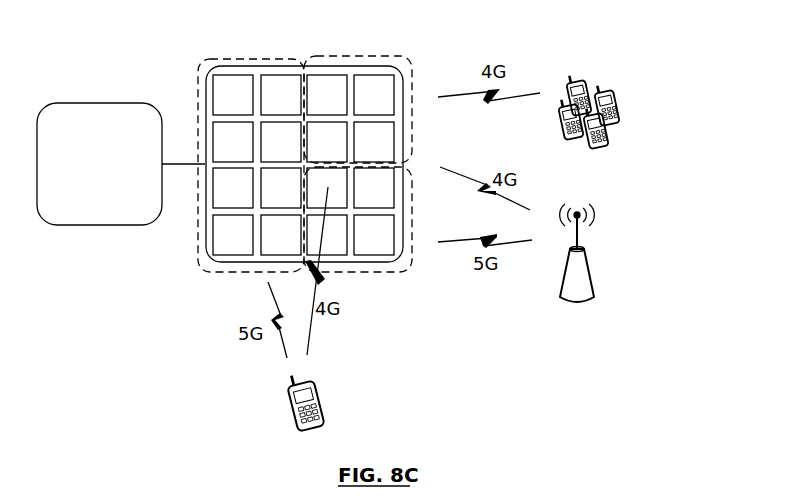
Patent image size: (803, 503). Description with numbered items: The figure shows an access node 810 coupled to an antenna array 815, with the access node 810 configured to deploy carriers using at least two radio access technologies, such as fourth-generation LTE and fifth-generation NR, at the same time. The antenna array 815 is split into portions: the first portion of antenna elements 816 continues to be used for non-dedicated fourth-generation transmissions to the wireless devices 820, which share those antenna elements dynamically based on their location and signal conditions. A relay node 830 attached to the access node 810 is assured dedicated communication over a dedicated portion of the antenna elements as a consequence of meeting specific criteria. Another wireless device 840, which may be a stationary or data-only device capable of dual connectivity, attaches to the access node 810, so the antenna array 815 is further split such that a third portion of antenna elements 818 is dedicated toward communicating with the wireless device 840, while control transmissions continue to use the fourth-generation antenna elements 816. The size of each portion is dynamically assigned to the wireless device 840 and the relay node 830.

The access node 810 is at (84, 172).
The antenna array 815 is at (268, 62).
The antenna elements 816 is at (380, 55).
The third portion of antenna elements 818 is at (210, 265).
The wireless devices 820 is at (646, 85).
The relay node 830 is at (590, 278).
The wireless device 840 is at (322, 408).